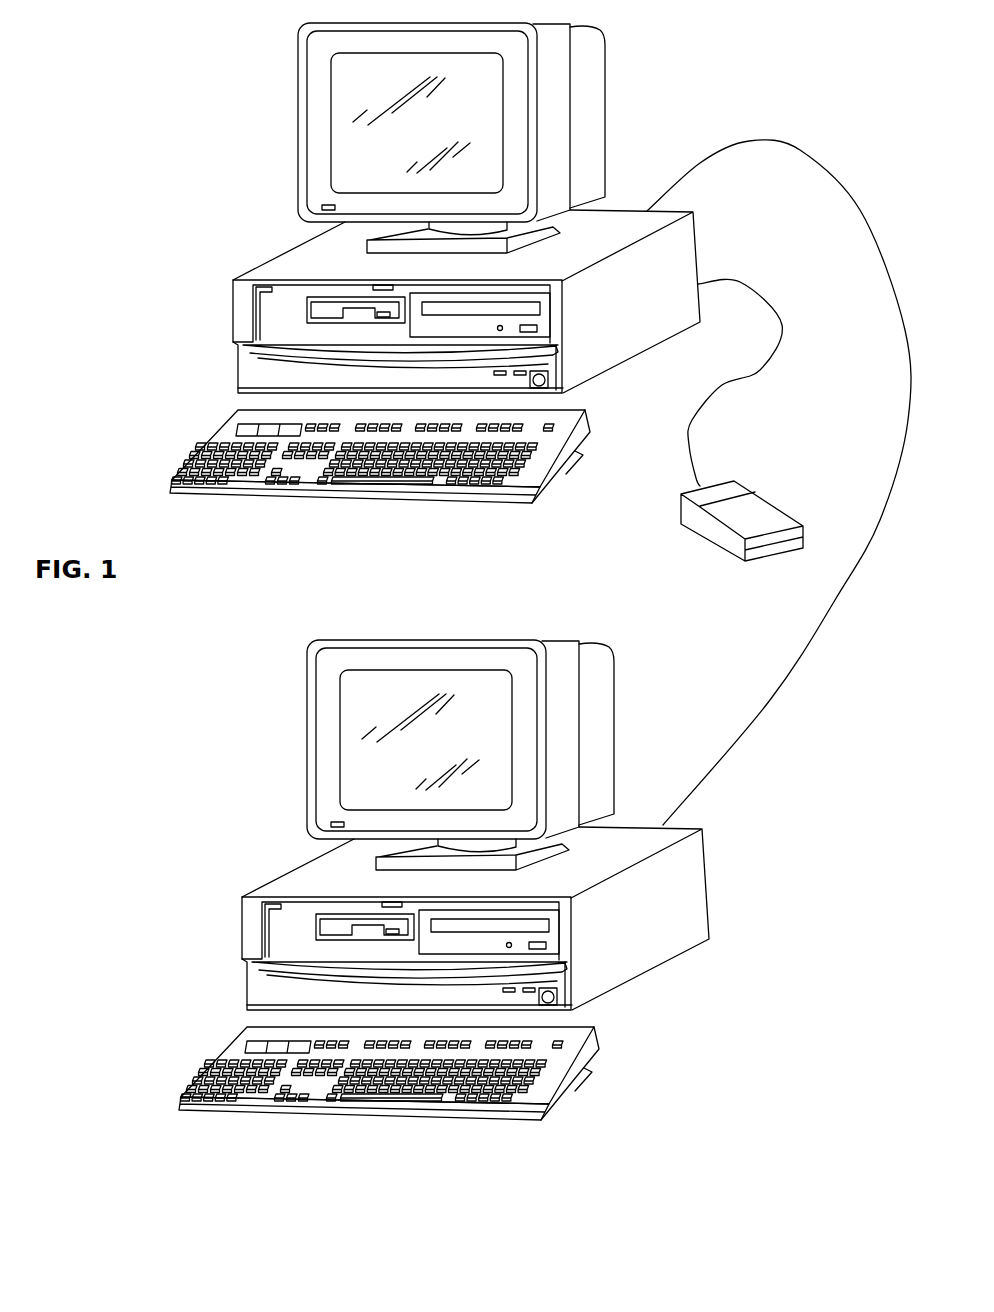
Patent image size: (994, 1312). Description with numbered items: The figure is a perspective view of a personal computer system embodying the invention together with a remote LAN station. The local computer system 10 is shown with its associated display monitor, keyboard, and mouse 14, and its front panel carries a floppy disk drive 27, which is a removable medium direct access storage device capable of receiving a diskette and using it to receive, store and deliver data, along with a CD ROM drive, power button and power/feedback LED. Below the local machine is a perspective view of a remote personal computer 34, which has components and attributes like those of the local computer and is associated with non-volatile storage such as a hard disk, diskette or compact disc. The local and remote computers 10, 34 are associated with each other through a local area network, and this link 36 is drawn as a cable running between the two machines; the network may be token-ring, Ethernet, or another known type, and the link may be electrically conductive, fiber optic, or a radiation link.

The computer system 10 is at (208, 106).
The mouse 14 is at (773, 497).
The floppy disk drive 27 is at (321, 884).
The remote personal computer 34 is at (438, 909).
The link 36 is at (811, 162).